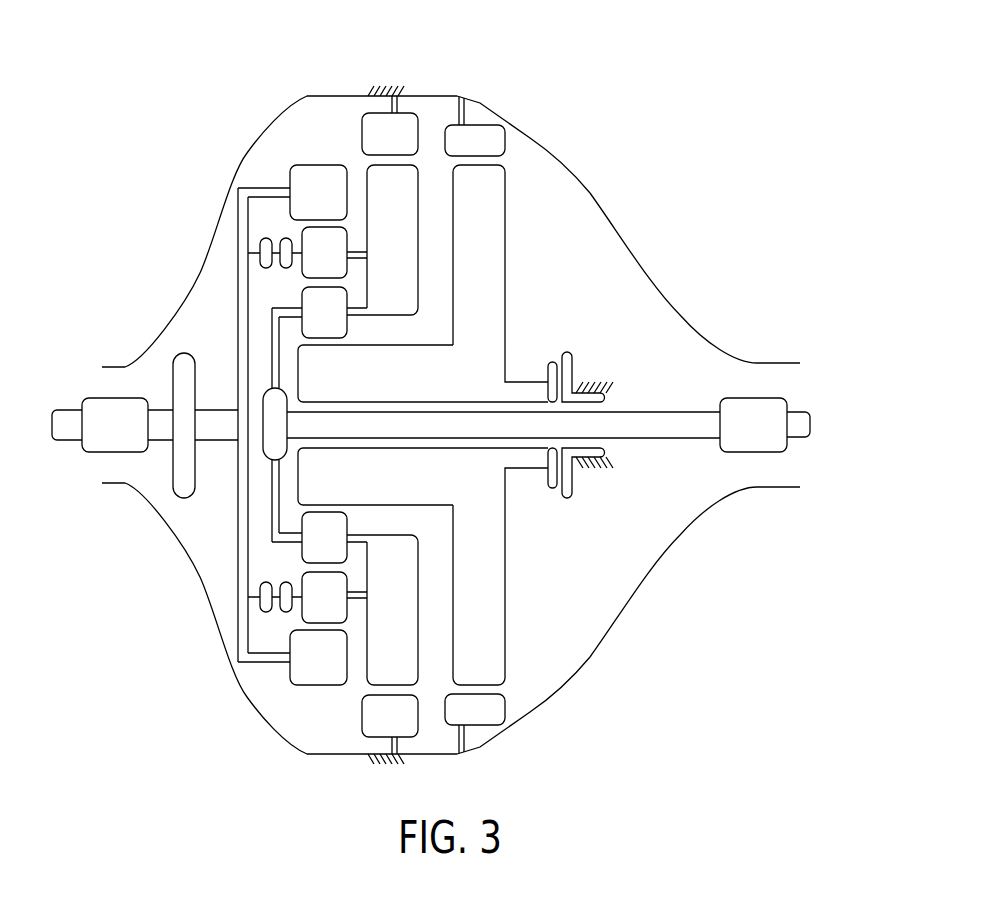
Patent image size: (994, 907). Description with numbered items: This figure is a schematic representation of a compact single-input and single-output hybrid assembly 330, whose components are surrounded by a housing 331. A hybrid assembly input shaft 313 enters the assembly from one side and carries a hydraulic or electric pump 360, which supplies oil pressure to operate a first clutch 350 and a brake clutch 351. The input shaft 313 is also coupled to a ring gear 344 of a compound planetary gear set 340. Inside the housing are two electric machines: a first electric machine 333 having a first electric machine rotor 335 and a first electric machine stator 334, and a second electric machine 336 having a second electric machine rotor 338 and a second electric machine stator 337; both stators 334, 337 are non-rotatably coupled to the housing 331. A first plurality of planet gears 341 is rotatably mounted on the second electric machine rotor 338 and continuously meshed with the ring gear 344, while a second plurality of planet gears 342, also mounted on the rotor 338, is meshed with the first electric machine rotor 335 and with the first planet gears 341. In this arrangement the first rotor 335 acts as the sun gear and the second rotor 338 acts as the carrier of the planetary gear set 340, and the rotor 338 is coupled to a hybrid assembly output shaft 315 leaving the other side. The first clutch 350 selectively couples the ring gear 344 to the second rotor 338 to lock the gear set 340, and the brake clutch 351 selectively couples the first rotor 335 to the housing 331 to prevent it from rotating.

The hybrid assembly input shaft 313 is at (62, 408).
The hybrid assembly output shaft 315 is at (803, 410).
The hybrid assembly 330 is at (679, 99).
The housing 331 is at (373, 81).
The first electric machine 333 is at (484, 99).
The first electric machine stator 334 is at (500, 138).
The first electric machine rotor 335 is at (490, 200).
The second electric machine 336 is at (404, 95).
The second electric machine stator 337 is at (377, 135).
The second electric machine rotor 338 is at (377, 187).
The compound planetary gear set 340 is at (281, 149).
The first plurality of planet gears 341 is at (317, 237).
The second plurality of planet gears 342 is at (332, 317).
The ring gear 344 is at (310, 183).
The first clutch 350 is at (272, 270).
The brake clutch 351 is at (555, 356).
The hydraulic or electric pump 360 is at (167, 481).